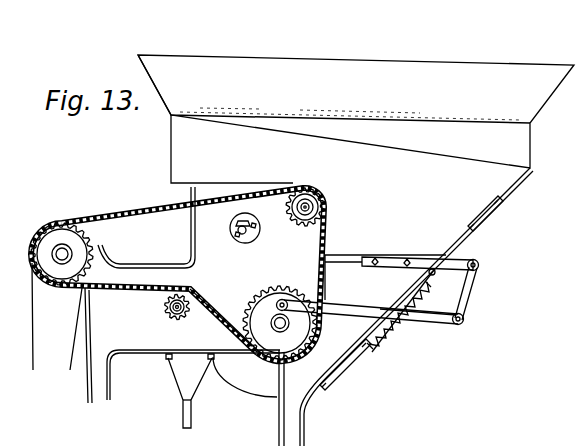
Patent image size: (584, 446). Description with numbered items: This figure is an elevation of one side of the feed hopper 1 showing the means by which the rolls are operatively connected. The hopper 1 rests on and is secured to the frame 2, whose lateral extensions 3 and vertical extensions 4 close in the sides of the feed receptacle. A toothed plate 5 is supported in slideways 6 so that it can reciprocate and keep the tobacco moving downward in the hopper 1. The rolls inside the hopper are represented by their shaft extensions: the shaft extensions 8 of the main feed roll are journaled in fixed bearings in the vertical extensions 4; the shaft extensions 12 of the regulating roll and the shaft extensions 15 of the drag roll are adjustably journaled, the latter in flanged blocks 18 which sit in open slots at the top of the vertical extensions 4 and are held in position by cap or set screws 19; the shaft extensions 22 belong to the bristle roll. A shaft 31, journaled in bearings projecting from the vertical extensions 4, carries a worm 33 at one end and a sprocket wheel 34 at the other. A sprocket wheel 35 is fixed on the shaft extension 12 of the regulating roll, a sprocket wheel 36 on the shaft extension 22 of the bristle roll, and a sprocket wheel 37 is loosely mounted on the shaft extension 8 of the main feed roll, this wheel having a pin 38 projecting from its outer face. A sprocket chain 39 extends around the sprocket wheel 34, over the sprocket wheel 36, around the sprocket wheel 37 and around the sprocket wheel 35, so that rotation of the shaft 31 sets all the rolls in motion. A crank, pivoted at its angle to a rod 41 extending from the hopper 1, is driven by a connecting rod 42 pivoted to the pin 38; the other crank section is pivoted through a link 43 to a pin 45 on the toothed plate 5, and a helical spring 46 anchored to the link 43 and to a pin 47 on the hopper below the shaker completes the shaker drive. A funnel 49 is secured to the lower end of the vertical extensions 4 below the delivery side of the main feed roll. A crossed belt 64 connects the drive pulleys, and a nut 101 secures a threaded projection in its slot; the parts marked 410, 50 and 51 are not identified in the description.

The feed hopper 1 is at (380, 78).
The frame 2 is at (132, 353).
The lateral extensions 3 is at (350, 268).
The vertical extensions 4 is at (224, 190).
The toothed plate 5 is at (470, 246).
The slideways 6 is at (491, 220).
The shaft extensions 8 is at (292, 323).
The shaft extensions 12 is at (328, 209).
The shaft extensions 15 is at (241, 235).
The flanged blocks 18 is at (260, 235).
The cap or set screws 19 is at (258, 222).
The shaft extensions 22 is at (176, 313).
The shaft 31 is at (68, 254).
The worm 33 is at (157, 206).
The sprocket wheel 34 is at (80, 243).
The sprocket wheel 35 is at (320, 194).
The sprocket wheel 36 is at (167, 308).
The sprocket wheel 37 is at (256, 302).
The pin 38 is at (287, 302).
The sprocket chain 39 is at (202, 313).
The rod 41 is at (484, 265).
The link 410 is at (480, 280).
The connecting rod 42 is at (427, 320).
The link 43 is at (432, 275).
The pin 45 is at (428, 288).
The helical spring 46 is at (392, 336).
The pin 47 is at (372, 350).
The funnel 49 is at (204, 386).
The funnel 50 is at (186, 386).
The bracket 51 is at (207, 360).
The crossed belt 64 is at (30, 346).
The nut 101 is at (13, 214).